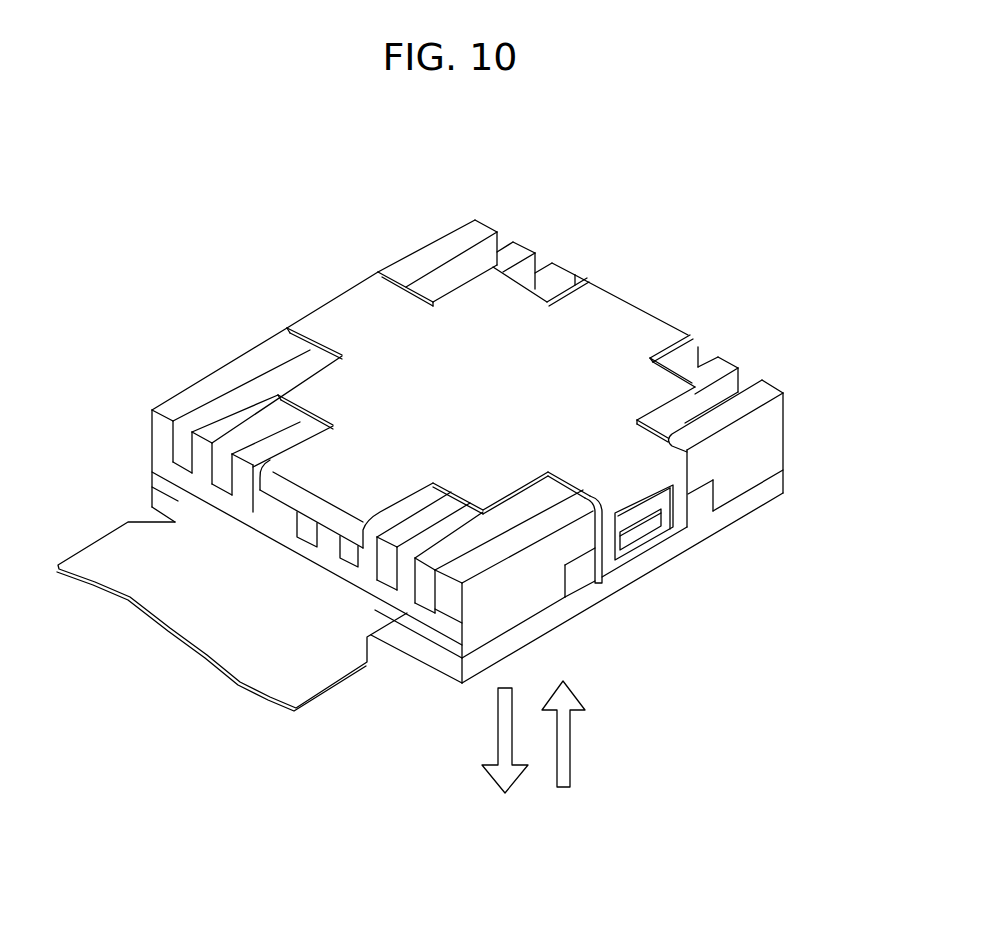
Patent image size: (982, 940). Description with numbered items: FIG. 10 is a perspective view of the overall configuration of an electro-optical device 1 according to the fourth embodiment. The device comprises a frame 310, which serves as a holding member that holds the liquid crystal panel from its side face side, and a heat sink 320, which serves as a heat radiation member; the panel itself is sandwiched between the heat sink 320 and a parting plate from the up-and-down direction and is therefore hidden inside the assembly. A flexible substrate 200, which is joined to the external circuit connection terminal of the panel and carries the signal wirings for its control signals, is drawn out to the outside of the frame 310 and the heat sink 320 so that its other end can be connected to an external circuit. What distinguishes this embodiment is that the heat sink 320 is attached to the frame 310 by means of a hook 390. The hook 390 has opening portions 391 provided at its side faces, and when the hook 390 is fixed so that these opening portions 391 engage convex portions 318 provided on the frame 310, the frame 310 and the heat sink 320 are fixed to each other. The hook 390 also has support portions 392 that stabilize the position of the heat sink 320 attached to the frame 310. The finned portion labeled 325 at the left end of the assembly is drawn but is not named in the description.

The electro-optical device 1 is at (712, 236).
The heat dissipation fins 325 is at (150, 388).
The flexible substrate 200 is at (103, 545).
The support portions 392 is at (330, 528).
The opening portions 391 is at (617, 518).
The convex portions 318 is at (642, 537).
The hook 390 is at (605, 570).
The frame 310 is at (728, 517).
The heat sink 320 is at (777, 433).